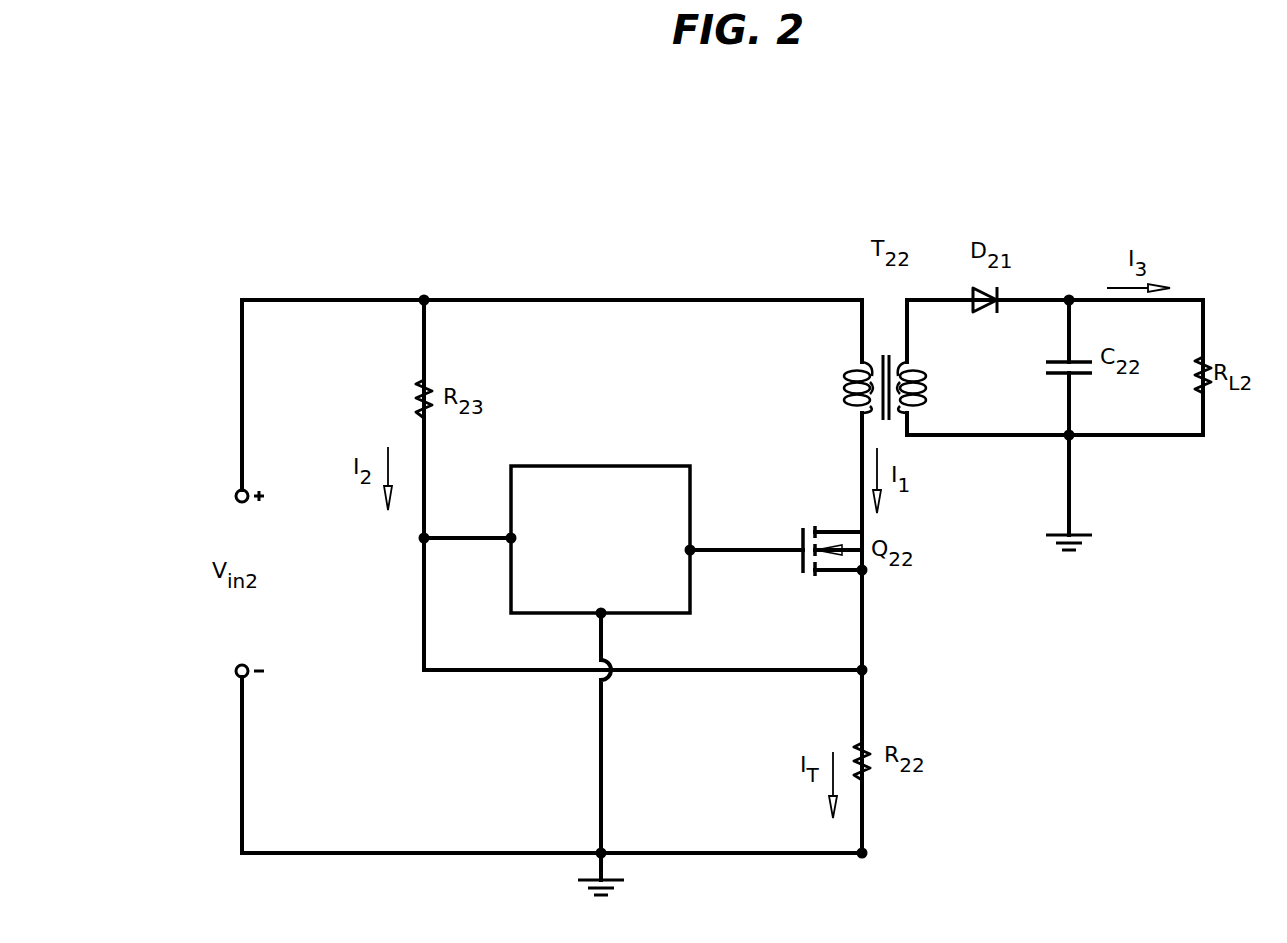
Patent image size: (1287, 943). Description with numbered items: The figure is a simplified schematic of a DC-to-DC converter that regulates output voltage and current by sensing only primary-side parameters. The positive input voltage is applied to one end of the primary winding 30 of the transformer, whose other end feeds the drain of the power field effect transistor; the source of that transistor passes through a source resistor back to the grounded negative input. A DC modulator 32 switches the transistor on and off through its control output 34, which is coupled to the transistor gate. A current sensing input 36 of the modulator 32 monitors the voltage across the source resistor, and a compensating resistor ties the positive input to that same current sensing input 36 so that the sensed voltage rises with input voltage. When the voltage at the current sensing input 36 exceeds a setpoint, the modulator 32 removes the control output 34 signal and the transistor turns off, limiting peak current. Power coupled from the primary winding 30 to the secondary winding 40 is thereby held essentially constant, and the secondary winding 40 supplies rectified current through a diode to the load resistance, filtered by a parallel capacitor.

The primary winding 30 is at (845, 391).
The DC modulator 32 is at (543, 466).
The control output 34 is at (694, 549).
The current sensing input 36 is at (509, 537).
The secondary winding 40 is at (925, 391).